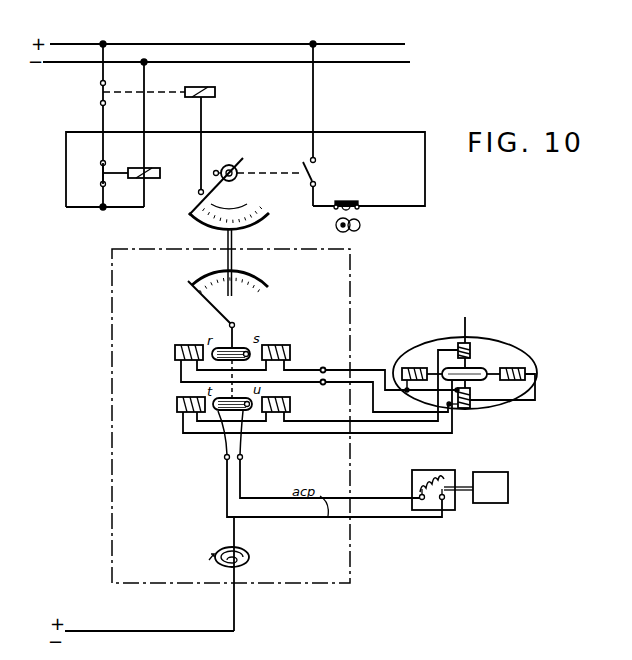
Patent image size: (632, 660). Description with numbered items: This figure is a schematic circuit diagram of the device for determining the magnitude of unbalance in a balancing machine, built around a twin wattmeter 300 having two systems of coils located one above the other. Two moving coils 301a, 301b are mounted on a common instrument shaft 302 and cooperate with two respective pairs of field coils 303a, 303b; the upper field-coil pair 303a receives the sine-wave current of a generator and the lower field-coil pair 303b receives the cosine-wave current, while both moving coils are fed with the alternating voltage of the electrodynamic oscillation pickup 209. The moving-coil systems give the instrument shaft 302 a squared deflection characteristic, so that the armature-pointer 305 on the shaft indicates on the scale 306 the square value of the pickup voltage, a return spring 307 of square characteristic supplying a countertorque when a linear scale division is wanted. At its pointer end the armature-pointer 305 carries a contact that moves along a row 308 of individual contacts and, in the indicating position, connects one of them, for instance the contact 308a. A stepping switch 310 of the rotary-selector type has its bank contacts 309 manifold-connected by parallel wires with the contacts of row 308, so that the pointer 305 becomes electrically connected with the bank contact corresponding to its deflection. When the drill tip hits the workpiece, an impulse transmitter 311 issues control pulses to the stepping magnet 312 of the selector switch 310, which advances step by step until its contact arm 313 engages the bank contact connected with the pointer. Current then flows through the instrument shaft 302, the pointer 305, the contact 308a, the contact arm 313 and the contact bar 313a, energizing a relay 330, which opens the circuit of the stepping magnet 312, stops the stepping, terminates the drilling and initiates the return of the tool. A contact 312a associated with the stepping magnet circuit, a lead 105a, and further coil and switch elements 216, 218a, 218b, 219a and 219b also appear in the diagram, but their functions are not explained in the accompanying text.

The relay 330 is at (215, 130).
The stepping magnet 312 is at (148, 168).
The relay contact 312a is at (101, 171).
The stepping switch 310 is at (236, 168).
The contact arm 313 is at (200, 210).
The contact bar 313a is at (233, 206).
The bank contacts 309 is at (263, 215).
The impulse transmitter 311 is at (357, 229).
The twin wattmeter 300 is at (351, 268).
The scale 306 is at (255, 283).
The row of individual contacts 308 is at (265, 291).
The contact 308a is at (240, 291).
The armature-pointer 305 is at (212, 310).
The upper field-coil pair 303a is at (201, 345).
The moving coil 301a is at (241, 346).
The lower field-coil pair 303b is at (196, 397).
The moving coil 301b is at (214, 428).
The instrument shaft 302 is at (233, 529).
The return spring 307 is at (251, 557).
The electrodynamic oscillation pickup 209 is at (445, 470).
The lead 105a is at (468, 318).
The coil 219a is at (472, 345).
The reed switch 216 is at (488, 366).
The coil 218a is at (407, 366).
The coil 218b is at (537, 374).
The coil 219b is at (470, 409).